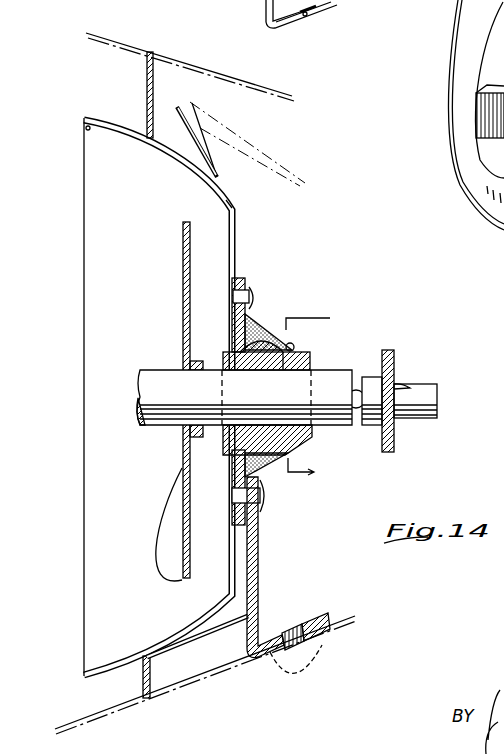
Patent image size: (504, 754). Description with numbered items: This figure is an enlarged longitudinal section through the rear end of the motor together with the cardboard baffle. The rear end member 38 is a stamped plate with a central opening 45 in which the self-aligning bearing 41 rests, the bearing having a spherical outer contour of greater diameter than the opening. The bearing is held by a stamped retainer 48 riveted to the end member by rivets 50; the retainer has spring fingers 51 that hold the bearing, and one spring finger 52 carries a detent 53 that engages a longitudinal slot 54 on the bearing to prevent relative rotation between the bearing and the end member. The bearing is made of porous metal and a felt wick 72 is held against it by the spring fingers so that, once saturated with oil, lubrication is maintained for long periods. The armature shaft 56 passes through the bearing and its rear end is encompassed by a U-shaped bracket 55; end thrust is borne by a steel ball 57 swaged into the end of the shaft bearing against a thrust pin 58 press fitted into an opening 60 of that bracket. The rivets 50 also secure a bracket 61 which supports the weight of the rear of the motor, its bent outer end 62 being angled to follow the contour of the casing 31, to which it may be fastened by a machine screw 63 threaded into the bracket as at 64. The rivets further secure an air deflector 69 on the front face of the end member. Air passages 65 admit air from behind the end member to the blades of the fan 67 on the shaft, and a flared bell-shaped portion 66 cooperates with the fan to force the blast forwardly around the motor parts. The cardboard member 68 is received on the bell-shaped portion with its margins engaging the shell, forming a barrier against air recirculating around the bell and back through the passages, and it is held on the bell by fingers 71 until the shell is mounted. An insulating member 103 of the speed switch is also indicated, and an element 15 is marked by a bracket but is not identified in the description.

The bracket assembly 15 is at (308, 399).
The casing 31 is at (110, 34).
The end member 38 is at (240, 282).
The bearing 41 is at (300, 358).
The central opening 45 is at (233, 451).
The retainer 48 is at (252, 316).
The rivets 50 is at (254, 297).
The spring fingers 51 is at (288, 458).
The spring finger 52 is at (292, 346).
The detent 53 is at (280, 358).
The longitudinal slot 54 is at (222, 378).
The U-shaped bracket 55 is at (394, 355).
The armature shaft 56 is at (148, 380).
The steel ball 57 is at (360, 398).
The thrust pin 58 is at (417, 415).
The opening 60 is at (407, 385).
The bracket 61 is at (259, 562).
The bent outer end 62 is at (262, 646).
The machine screw 63 is at (283, 667).
The threaded portion 64 is at (298, 627).
The air passages 65 is at (240, 277).
The bell-shaped portion 66 is at (104, 130).
The fan 67 is at (183, 265).
The cardboard member 68 is at (147, 76).
The air deflector 69 is at (232, 200).
The fingers 71 is at (207, 114).
The felt wick 72 is at (246, 0).
The insulating member 103 is at (254, 127).